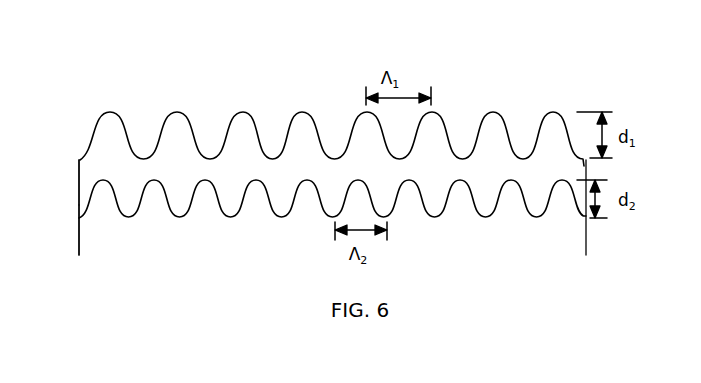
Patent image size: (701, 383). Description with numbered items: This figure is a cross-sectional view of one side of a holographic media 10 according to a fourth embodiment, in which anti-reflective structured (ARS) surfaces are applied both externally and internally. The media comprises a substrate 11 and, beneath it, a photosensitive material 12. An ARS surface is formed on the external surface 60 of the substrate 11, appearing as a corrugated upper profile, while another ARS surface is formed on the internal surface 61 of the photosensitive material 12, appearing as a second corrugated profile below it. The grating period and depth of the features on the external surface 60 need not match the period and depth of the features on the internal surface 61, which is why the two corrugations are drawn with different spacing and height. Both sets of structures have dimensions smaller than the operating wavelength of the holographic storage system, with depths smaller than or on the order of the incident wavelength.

The holographic media 10 is at (586, 248).
The substrate 11 is at (118, 158).
The photosensitive material 12 is at (108, 231).
The external surface 60 is at (235, 114).
The internal surface 61 is at (307, 178).